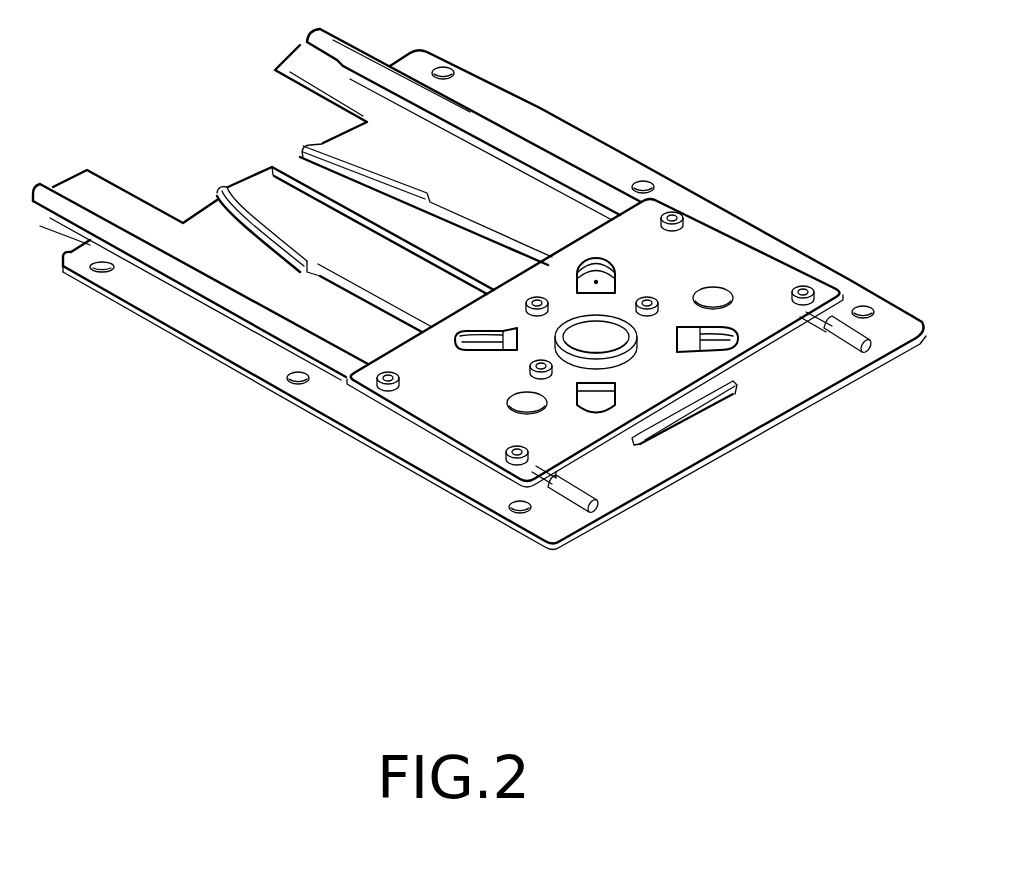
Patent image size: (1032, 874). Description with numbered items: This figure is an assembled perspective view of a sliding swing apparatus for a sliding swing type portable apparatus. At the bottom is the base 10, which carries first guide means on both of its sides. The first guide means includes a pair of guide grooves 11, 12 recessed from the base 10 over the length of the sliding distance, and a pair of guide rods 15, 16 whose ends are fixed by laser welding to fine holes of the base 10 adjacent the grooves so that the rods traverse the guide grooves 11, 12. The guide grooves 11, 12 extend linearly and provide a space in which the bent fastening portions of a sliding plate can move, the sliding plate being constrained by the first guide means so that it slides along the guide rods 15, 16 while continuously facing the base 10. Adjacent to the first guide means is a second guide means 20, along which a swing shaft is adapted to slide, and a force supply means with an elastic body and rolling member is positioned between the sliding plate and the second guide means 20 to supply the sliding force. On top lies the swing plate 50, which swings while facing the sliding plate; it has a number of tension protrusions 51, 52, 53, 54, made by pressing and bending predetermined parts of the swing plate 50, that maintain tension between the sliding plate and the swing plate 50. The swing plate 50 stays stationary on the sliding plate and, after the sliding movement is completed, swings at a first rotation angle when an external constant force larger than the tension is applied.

The base 10 is at (727, 425).
The guide groove 11 is at (450, 133).
The guide groove 12 is at (167, 270).
The guide rod 15 is at (267, 325).
The guide rod 16 is at (528, 158).
The second guide means 20 is at (283, 157).
The swing plate 50 is at (748, 262).
The tension protrusion 51 is at (617, 281).
The tension protrusion 52 is at (480, 345).
The tension protrusion 53 is at (597, 405).
The tension protrusion 54 is at (733, 338).